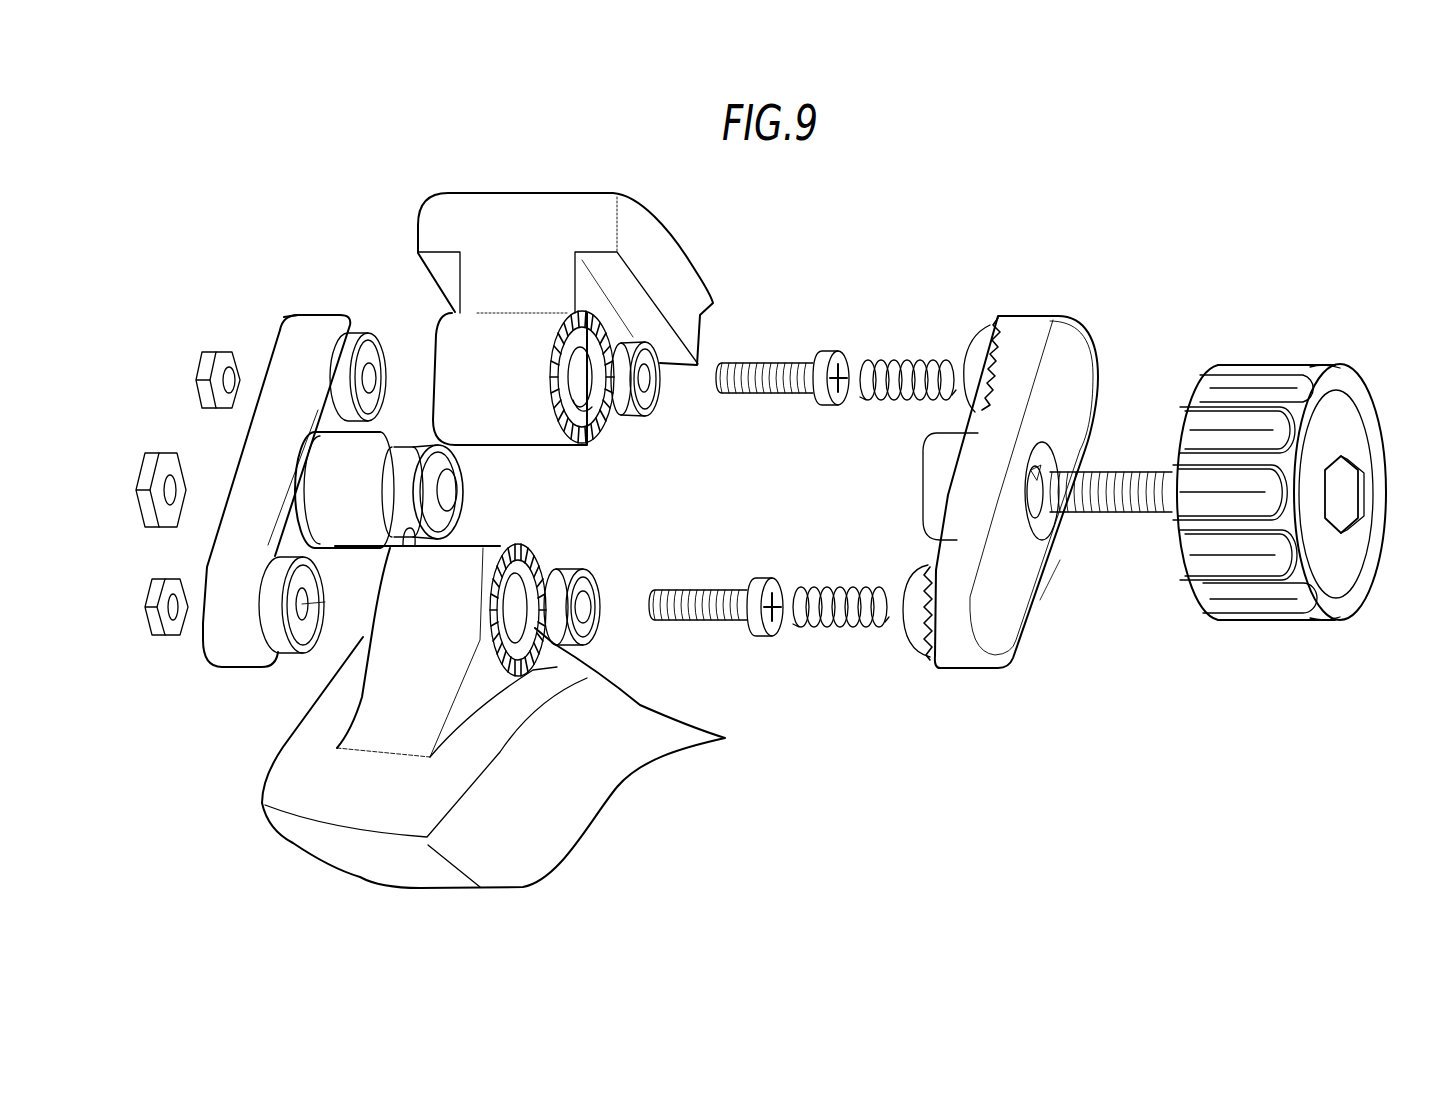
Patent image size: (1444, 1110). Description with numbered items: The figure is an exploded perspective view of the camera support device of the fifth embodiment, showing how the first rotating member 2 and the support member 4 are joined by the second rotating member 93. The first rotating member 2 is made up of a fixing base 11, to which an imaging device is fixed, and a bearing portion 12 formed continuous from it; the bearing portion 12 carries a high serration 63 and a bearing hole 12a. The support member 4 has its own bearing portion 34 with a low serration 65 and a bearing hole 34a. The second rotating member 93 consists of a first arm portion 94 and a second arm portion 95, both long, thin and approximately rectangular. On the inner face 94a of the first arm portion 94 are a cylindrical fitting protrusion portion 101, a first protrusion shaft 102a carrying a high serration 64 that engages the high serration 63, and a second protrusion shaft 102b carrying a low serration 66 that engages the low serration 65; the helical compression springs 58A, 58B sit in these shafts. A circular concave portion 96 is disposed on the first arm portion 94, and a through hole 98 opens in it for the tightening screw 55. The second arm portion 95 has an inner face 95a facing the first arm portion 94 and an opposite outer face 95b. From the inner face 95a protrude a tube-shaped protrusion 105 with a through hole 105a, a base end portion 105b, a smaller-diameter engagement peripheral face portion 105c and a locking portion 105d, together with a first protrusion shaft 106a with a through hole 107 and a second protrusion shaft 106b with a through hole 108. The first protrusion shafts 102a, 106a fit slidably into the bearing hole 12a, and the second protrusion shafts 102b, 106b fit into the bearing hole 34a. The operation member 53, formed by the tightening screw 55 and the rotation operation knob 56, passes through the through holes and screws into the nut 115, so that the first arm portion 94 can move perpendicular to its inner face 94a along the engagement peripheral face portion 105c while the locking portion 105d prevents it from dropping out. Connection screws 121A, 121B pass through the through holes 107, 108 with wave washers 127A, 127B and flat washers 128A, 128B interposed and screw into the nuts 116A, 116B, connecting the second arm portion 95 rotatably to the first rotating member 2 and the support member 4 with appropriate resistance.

The first rotating member 2 is at (681, 208).
The support member 4 is at (617, 852).
The fixing base 11 is at (555, 203).
The bearing portion 12 is at (543, 446).
The bearing hole 12a is at (600, 430).
The bearing portion 34 is at (482, 545).
The bearing hole 34a is at (560, 655).
The operation member 53 is at (1274, 333).
The tightening screw 55 is at (1116, 475).
The rotation operation knob 56 is at (1365, 442).
The helical compression spring 58A is at (900, 358).
The helical compression spring 58B is at (836, 630).
The high serration 63 is at (553, 343).
The high serration 64 is at (995, 318).
The low serration 65 is at (535, 670).
The low serration 66 is at (922, 645).
The second rotating member 93 is at (1014, 708).
The first arm portion 94 is at (1058, 300).
The inner face 94a is at (990, 402).
The second arm portion 95 is at (317, 294).
The inner face 95a is at (316, 413).
The outer face 95b is at (279, 320).
The concave portion 96 is at (1050, 508).
The through hole 98 is at (1040, 525).
The fitting protrusion portion 101 is at (930, 462).
The first protrusion shaft 102a is at (968, 352).
The second protrusion shaft 102b is at (915, 572).
The tube-shaped protrusion 105 is at (443, 558).
The through hole 105a is at (450, 490).
The base end portion 105b is at (396, 448).
The engagement peripheral face portion 105c is at (408, 542).
The locking portion 105d is at (452, 458).
The first protrusion shaft 106a is at (360, 338).
The second protrusion shaft 106b is at (285, 650).
The through hole 107 is at (372, 376).
The through hole 108 is at (300, 645).
The nut 115 is at (160, 462).
The nut 116A is at (211, 358).
The nut 116B is at (152, 615).
The connection screw 121A is at (784, 362).
The connection screw 121B is at (715, 590).
The wave washer 127A is at (628, 404).
The wave washer 127B is at (565, 576).
The flat washer 128A is at (652, 400).
The flat washer 128B is at (590, 598).